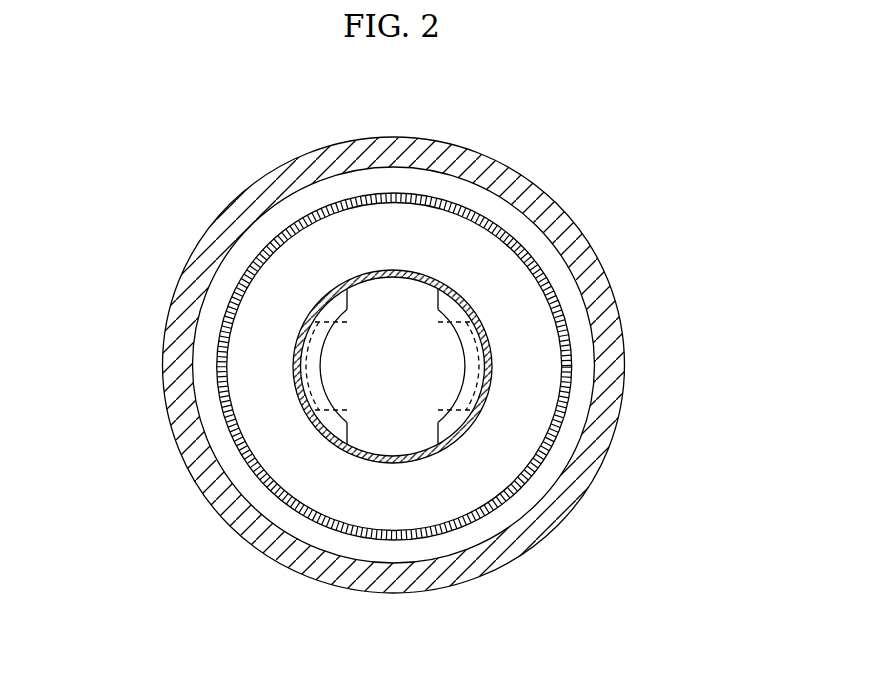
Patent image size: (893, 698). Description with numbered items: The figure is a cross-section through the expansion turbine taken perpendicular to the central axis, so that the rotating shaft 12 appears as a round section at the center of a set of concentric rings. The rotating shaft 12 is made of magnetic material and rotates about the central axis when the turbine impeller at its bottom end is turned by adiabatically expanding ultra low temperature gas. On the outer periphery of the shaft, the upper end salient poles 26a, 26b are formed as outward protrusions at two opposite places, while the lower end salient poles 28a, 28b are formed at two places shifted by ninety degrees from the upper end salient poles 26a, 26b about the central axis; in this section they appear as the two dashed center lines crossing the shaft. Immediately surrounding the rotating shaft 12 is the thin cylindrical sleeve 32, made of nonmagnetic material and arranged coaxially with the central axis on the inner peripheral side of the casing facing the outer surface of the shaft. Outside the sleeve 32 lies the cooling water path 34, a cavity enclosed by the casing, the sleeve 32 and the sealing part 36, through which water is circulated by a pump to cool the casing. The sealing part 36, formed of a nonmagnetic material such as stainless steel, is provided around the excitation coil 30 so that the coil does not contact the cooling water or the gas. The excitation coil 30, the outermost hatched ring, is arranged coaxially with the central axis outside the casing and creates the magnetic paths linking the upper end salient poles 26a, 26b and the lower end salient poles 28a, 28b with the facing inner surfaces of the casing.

The rotating shaft 12 is at (377, 420).
The upper end salient pole 26a is at (400, 437).
The upper end salient pole 26b is at (368, 297).
The lower end salient pole 28a is at (505, 373).
The lower end salient pole 28b is at (293, 373).
The excitation coil 30 is at (522, 230).
The sleeve 32 is at (313, 423).
The cooling water path 34 is at (293, 460).
The sealing part 36 is at (547, 283).